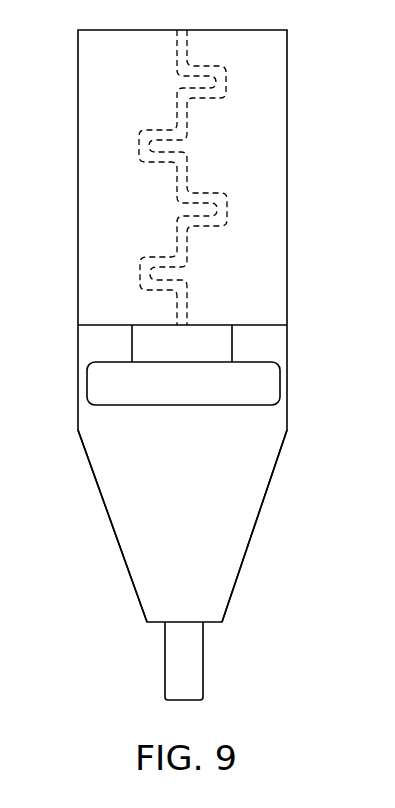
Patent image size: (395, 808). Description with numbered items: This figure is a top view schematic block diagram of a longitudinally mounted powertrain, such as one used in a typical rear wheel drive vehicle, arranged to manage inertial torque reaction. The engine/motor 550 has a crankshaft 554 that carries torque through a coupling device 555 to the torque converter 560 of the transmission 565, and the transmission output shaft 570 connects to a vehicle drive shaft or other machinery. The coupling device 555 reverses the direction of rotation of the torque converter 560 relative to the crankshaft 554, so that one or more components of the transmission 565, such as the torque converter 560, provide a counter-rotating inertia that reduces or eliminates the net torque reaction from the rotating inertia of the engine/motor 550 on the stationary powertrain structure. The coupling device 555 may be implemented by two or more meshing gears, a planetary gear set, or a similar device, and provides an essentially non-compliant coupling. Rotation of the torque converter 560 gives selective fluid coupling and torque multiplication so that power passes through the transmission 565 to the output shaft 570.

The engine/motor 550 is at (268, 170).
The crankshaft 554 is at (98, 148).
The coupling device 555 is at (237, 352).
The torque converter 560 is at (100, 377).
The transmission 565 is at (248, 491).
The output shaft 570 is at (183, 665).